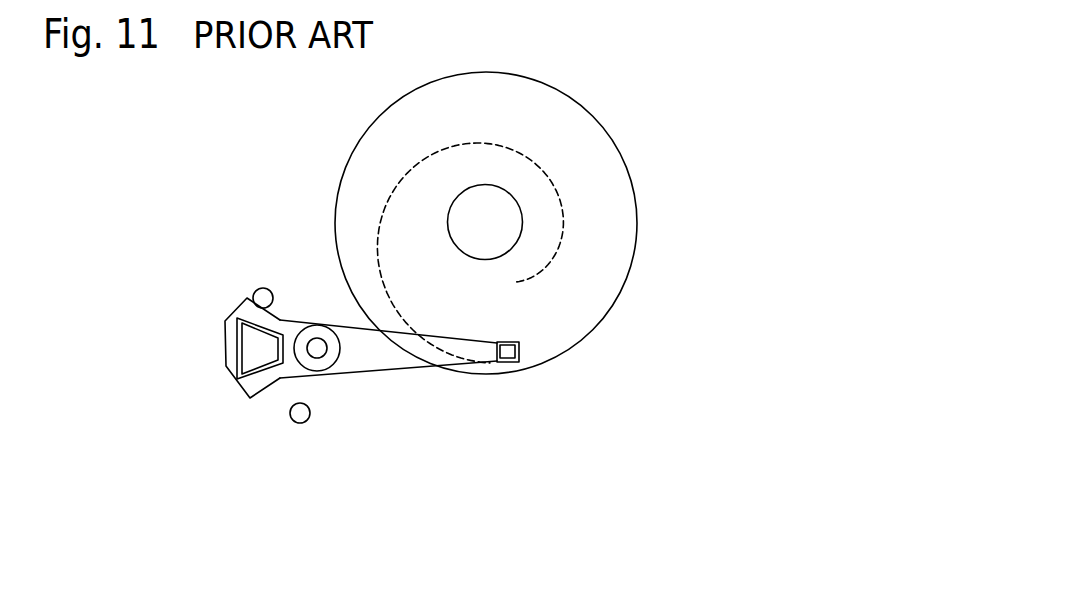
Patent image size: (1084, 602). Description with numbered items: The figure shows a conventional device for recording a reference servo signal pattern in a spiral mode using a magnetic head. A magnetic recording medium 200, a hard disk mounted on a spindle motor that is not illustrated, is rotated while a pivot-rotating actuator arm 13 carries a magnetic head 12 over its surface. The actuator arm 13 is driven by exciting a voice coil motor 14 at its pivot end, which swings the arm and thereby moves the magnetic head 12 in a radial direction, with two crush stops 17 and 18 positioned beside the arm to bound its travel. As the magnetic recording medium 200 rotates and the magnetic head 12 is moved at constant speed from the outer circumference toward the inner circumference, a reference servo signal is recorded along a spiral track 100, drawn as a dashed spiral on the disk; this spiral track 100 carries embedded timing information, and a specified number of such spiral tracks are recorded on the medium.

The magnetic recording medium 200 is at (605, 153).
The spiral track 100 is at (552, 252).
The magnetic head 12 is at (519, 352).
The actuator arm 13 is at (377, 362).
The voice coil motor 14 is at (242, 353).
The crush stop 17 is at (256, 291).
The crush stop 18 is at (297, 423).